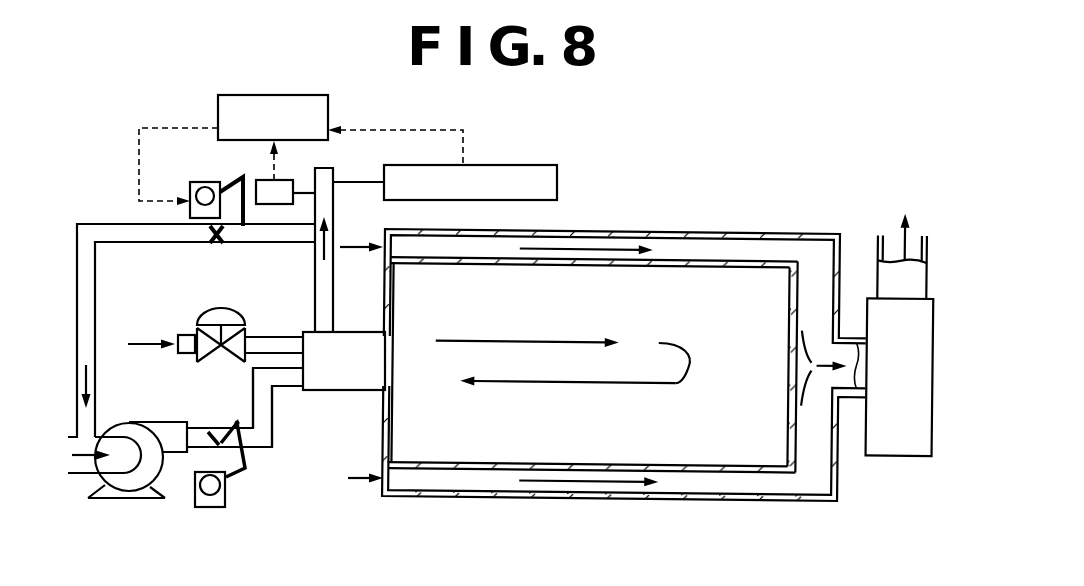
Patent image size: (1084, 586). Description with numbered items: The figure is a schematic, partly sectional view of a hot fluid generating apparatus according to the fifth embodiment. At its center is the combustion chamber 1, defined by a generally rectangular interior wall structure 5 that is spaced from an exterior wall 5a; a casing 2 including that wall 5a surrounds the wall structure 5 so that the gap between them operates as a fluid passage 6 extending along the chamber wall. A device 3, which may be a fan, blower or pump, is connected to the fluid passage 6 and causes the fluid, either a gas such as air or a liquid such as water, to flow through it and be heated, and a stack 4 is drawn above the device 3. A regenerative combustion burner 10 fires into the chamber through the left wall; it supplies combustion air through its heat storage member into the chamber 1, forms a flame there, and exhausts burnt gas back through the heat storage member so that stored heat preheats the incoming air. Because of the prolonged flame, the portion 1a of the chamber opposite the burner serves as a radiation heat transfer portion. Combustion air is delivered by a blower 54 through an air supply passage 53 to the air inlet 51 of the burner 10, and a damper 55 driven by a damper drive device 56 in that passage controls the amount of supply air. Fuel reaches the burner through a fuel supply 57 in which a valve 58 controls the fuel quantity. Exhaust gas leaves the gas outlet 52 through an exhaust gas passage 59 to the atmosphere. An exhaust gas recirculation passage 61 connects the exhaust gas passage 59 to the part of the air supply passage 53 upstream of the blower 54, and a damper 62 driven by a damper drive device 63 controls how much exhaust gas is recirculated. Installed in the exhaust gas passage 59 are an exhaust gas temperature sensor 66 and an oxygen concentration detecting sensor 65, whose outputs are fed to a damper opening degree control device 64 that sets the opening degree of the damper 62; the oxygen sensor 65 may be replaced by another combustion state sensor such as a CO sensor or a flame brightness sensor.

The combustion chamber 1 is at (696, 293).
The portion of the combustion chamber opposite to the burner 1a is at (791, 298).
The casing 2 is at (656, 232).
The device for causing fluid to flow 3 is at (900, 428).
The exhaust stack 4 is at (876, 275).
The interior wall structure 5 is at (693, 470).
The exterior wall 5a is at (535, 497).
The fluid passage 6 is at (581, 232).
The regenerative combustion burner 10 is at (357, 345).
The air inlet 51 is at (300, 390).
The gas outlet 52 is at (322, 332).
The air supply passage 53 is at (273, 433).
The blower 54 is at (125, 480).
The damper 55 is at (200, 431).
The damper drive device 56 is at (214, 507).
The fuel supply 57 is at (186, 335).
The valve 58 is at (225, 308).
The exhaust gas passage 59 is at (335, 212).
The exhaust gas recirculation passage 61 is at (92, 226).
The damper 62 is at (213, 238).
The damper drive device 63 is at (197, 182).
The damper opening degree control device 64 is at (328, 118).
The oxygen concentration detecting sensor 65 is at (503, 165).
The exhaust gas temperature sensor 66 is at (262, 180).